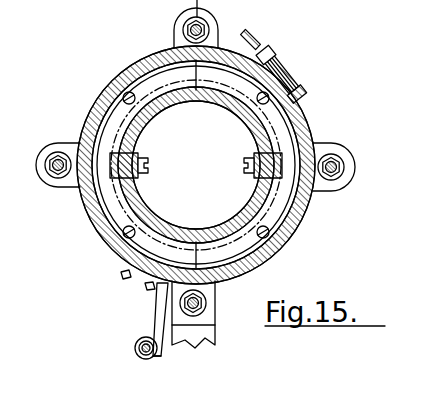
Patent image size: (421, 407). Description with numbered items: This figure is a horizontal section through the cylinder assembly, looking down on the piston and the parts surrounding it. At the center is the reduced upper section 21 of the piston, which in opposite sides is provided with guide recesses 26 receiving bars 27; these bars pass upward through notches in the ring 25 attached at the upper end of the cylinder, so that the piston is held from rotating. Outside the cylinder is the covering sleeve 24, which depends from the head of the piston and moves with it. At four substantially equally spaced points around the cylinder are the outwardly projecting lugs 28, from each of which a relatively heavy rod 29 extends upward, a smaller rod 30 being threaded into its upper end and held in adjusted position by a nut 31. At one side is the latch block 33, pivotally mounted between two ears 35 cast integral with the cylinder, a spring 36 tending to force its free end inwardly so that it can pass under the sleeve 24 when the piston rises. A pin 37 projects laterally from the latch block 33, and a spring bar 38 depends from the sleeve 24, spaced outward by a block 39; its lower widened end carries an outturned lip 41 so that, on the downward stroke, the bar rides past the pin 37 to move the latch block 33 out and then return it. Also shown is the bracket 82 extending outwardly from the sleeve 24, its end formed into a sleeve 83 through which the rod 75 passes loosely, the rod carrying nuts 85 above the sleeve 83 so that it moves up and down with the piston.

The upper section of piston 21 is at (156, 224).
The covering sleeve 24 is at (302, 125).
The ring 25 is at (284, 214).
The guide recesses 26 is at (250, 180).
The bars 27 is at (137, 150).
The lugs 28 is at (218, 26).
The rod 29 is at (178, 30).
The smaller rod 30 is at (332, 181).
The nut 31 is at (338, 174).
The latch block 33 is at (290, 85).
The ears 35 is at (305, 96).
The spring 36 is at (159, 8).
The pin 37 is at (294, 74).
The spring bar 38 is at (266, 49).
The block 39 is at (252, 38).
The outturned lip 41 is at (278, 62).
The rod 75 is at (146, 356).
The bracket 82 is at (162, 308).
The sleeve 83 is at (143, 354).
The nuts 85 is at (160, 354).